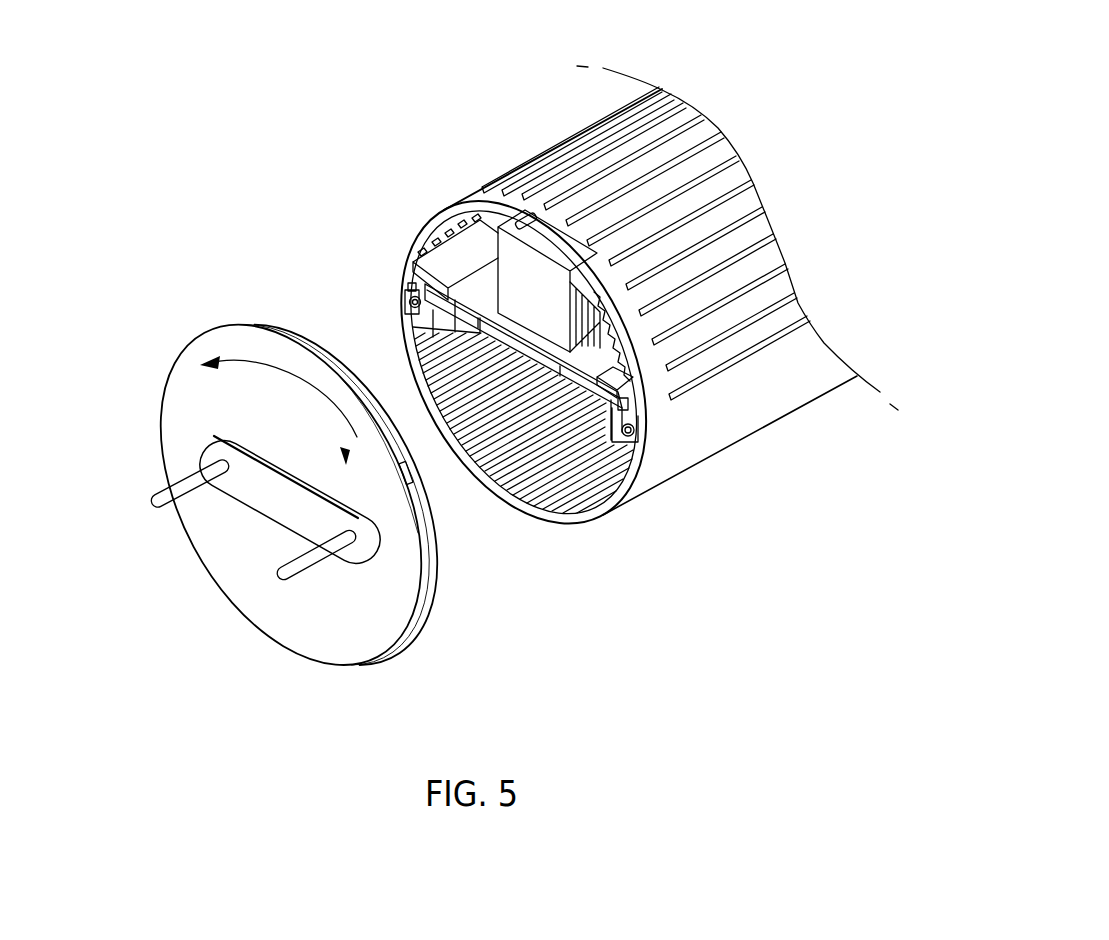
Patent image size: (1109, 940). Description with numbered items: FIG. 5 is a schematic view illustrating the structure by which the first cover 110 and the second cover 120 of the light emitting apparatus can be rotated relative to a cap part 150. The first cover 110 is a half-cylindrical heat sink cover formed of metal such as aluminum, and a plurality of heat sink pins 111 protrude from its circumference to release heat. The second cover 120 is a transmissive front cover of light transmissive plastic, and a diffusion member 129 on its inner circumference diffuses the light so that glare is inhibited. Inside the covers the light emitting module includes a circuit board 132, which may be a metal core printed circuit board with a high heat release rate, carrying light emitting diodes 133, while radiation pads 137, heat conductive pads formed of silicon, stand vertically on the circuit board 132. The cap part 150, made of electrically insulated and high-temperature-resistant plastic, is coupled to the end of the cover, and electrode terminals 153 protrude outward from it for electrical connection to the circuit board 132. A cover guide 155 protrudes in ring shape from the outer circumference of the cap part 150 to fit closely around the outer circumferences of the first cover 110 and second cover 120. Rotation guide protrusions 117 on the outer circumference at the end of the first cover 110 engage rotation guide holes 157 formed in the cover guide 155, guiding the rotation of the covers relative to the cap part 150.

The first cover 110 is at (452, 176).
The heat sink pins 111 is at (718, 167).
The rotation guide protrusions 117 is at (527, 214).
The second cover 120 is at (390, 288).
The diffusion member 129 is at (552, 508).
The circuit board 132 is at (640, 438).
The light emitting diodes 133 is at (577, 395).
The radiation pads 137 is at (517, 263).
The cap parts 150 is at (138, 436).
The electrode terminals 153 is at (147, 503).
The cover guides 155 is at (228, 326).
The rotation guide holes 157 is at (321, 350).